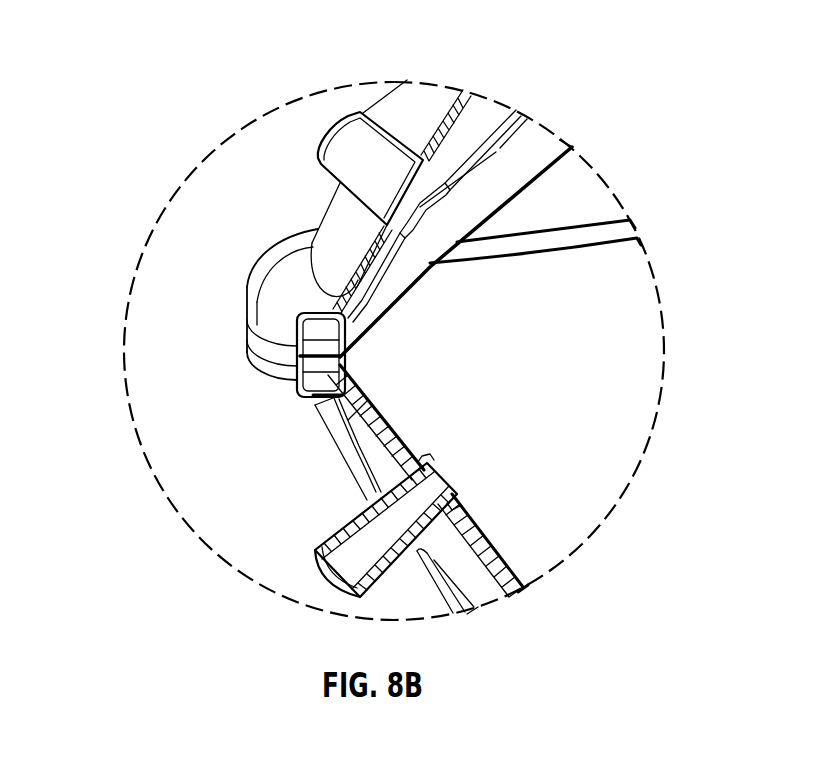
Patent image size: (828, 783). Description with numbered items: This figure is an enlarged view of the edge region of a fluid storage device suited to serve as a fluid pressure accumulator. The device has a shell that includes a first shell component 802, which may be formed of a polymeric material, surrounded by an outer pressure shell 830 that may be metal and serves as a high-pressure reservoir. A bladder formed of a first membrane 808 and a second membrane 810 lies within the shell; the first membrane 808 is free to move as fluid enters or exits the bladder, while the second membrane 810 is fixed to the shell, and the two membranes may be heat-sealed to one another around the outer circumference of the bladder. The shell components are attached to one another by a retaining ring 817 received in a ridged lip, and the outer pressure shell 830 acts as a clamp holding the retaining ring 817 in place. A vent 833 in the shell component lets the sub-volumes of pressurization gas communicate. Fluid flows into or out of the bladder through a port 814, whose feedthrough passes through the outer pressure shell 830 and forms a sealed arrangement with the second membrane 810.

The first shell component 802 is at (480, 119).
The first membrane 808 is at (544, 146).
The second membrane 810 is at (360, 418).
The port 814 is at (327, 557).
The retaining ring 817 is at (318, 338).
The outer pressure shell 830 is at (333, 227).
The vent 833 is at (420, 207).